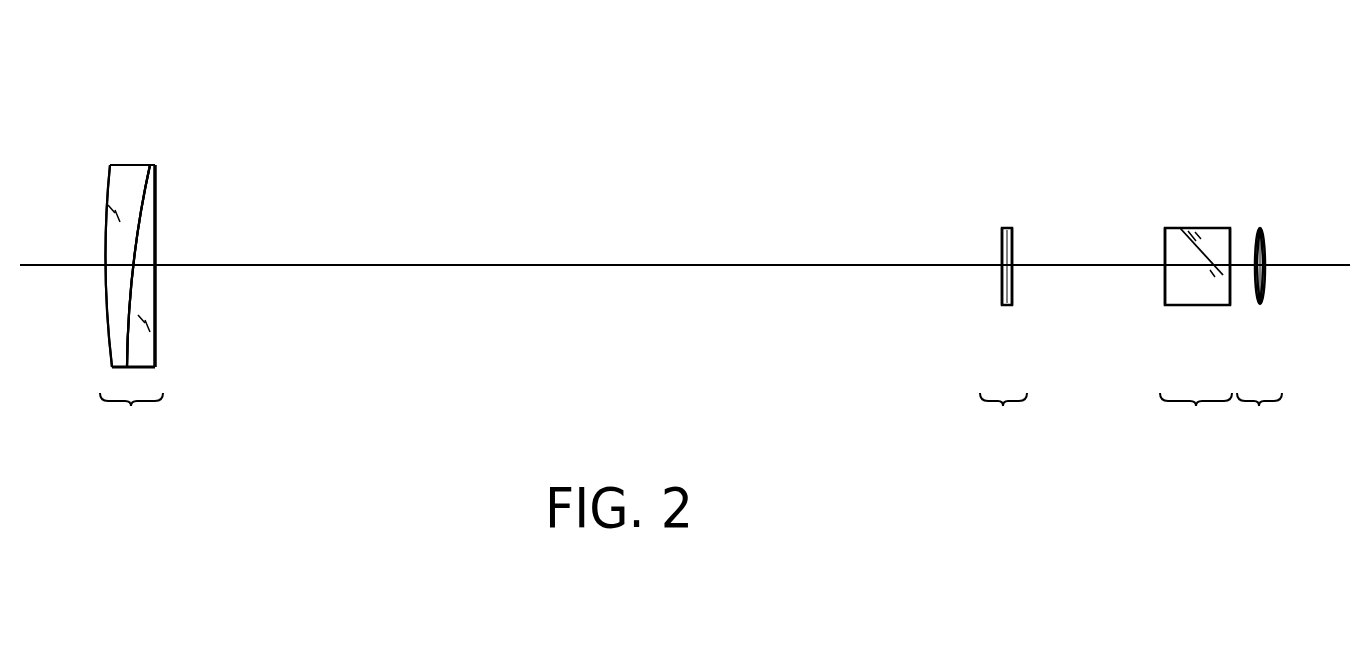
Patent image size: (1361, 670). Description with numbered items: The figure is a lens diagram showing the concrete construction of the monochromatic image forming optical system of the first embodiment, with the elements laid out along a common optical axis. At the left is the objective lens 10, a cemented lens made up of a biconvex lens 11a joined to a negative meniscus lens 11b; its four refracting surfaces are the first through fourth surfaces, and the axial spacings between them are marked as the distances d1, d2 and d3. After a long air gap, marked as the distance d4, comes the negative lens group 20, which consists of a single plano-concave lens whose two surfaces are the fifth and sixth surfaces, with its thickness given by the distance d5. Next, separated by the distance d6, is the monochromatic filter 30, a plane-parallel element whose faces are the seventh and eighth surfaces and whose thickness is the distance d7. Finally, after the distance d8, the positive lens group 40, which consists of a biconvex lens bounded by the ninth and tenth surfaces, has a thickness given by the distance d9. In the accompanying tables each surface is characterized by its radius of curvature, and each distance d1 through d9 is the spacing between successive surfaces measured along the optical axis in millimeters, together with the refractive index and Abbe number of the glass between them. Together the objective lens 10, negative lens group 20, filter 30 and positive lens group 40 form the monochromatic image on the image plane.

The objective lens 10 is at (132, 270).
The biconvex lens 11a is at (113, 357).
The negative meniscus lens 11b is at (148, 235).
The negative lens group 20 is at (1012, 315).
The monochromatic filter 30 is at (1172, 304).
The positive lens group 40 is at (1289, 304).
The surface distance d1 is at (106, 263).
The surface distance d2 is at (132, 266).
The surface distance d3 is at (150, 268).
The surface distance d4 is at (593, 265).
The surface distance d5 is at (1002, 275).
The surface distance d6 is at (1067, 266).
The surface distance d7 is at (1193, 267).
The surface distance d8 is at (1240, 267).
The surface distance d9 is at (1265, 280).